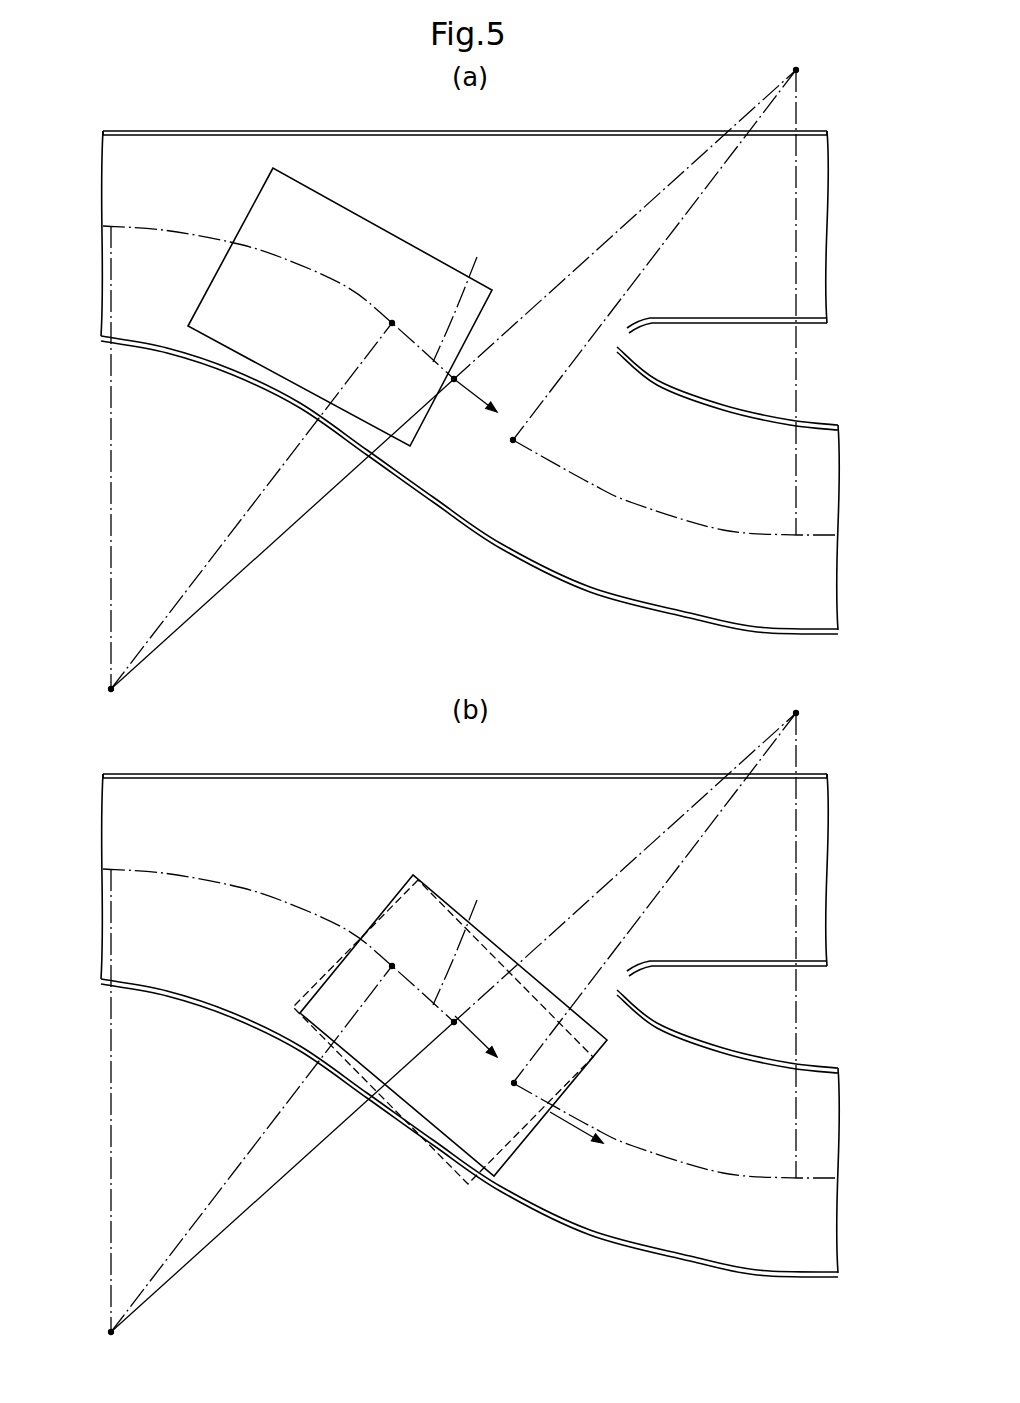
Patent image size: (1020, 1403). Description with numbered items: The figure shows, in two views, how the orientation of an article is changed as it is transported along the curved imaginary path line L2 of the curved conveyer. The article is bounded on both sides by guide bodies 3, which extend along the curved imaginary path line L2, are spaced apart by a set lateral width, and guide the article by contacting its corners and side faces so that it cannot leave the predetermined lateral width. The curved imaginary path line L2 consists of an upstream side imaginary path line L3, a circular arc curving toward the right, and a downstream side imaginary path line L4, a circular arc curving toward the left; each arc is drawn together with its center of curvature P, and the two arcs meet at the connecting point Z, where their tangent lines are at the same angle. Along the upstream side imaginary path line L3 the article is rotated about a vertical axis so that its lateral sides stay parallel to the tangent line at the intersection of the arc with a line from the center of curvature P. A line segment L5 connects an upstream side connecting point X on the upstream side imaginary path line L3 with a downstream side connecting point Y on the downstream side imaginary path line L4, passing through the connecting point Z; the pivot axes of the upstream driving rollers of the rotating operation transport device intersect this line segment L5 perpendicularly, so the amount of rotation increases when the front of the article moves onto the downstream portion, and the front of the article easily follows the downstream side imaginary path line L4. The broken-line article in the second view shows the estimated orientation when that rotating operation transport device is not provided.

The guide body 3 is at (286, 130).
The center of curvature P is at (799, 70).
The upstream side connecting point X is at (392, 323).
The downstream side connecting point Y is at (513, 440).
The connecting point Z is at (454, 379).
The curved imaginary path line L2 is at (470, 668).
The upstream side imaginary path line L3 is at (152, 227).
The downstream side imaginary path line L4 is at (631, 503).
The line segment L5 is at (491, 616).